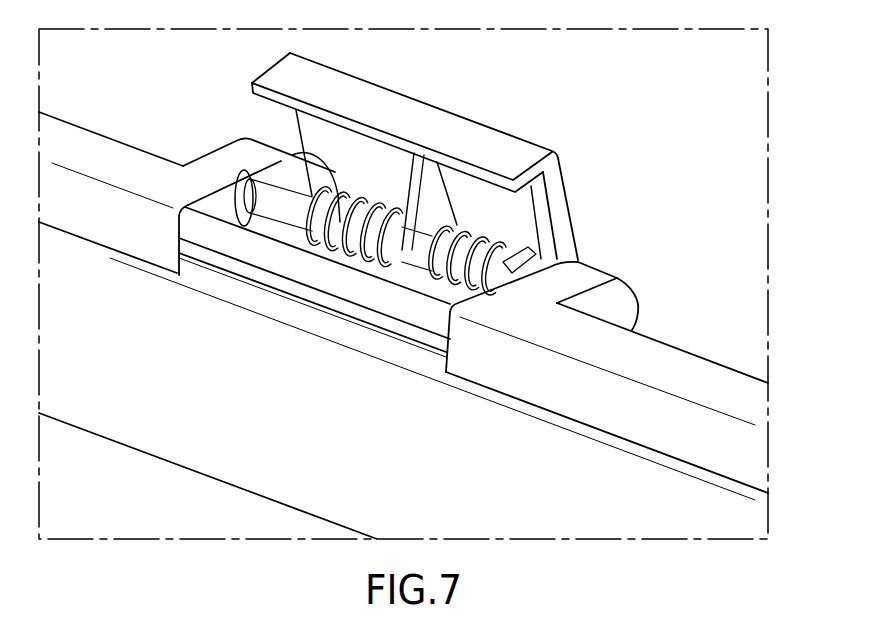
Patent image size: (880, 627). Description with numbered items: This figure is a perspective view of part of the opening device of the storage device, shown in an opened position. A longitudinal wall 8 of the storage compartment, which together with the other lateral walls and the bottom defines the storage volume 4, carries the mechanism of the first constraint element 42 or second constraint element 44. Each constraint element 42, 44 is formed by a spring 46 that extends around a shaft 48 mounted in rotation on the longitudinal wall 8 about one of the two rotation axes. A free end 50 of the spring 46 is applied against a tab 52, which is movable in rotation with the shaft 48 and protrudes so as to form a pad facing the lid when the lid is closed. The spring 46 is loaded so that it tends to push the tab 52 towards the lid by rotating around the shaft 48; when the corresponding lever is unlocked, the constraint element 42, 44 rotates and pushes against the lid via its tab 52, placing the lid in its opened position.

The storage volume 4 is at (130, 490).
The longitudinal wall 8 is at (300, 397).
The first constraint element 42 is at (486, 212).
The second constraint element 44 is at (542, 317).
The spring 46 is at (272, 150).
The shaft 48 is at (400, 250).
The free end 50 is at (453, 215).
The tab 52 is at (482, 150).